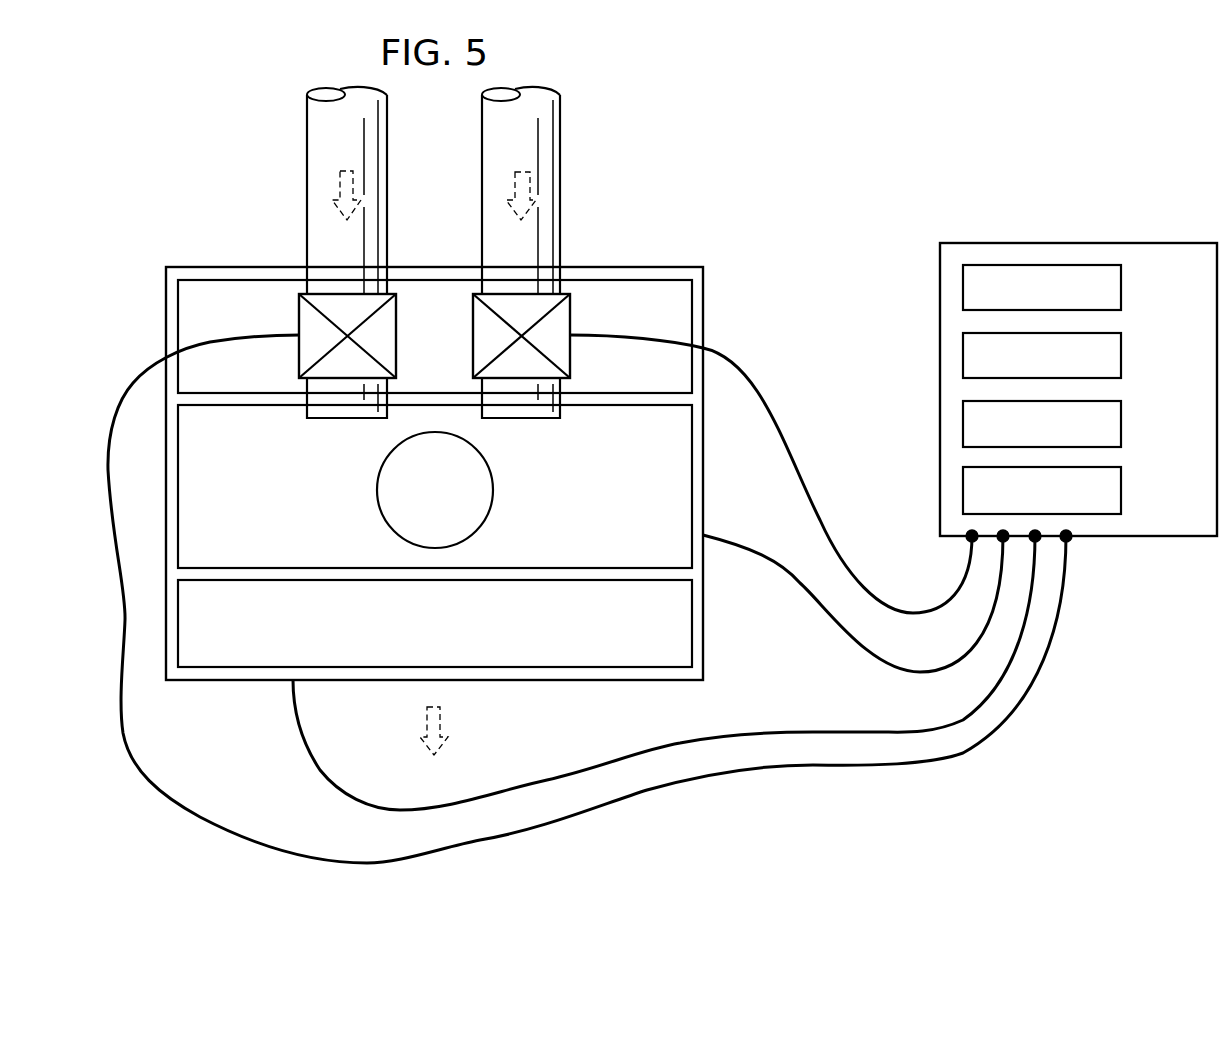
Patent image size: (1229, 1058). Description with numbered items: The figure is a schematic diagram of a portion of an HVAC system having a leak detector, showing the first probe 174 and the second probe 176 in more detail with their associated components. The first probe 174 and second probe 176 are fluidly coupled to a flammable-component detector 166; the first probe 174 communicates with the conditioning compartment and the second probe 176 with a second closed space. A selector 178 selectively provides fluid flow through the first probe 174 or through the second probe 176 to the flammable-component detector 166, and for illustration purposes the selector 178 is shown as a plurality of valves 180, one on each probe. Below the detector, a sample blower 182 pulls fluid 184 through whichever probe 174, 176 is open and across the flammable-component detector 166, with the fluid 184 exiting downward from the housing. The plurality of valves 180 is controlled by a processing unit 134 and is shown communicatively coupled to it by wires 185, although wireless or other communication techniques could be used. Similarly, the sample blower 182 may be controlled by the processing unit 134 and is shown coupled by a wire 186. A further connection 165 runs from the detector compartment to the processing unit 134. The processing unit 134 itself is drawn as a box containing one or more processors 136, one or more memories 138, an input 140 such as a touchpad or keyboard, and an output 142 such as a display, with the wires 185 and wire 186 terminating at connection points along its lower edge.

The processing unit 134 is at (1078, 421).
The processor 136 is at (1121, 288).
The memory 138 is at (1121, 355).
The input 140 is at (1121, 423).
The output 142 is at (1121, 490).
The sensor wire 165 is at (802, 578).
The flammable-component detector 166 is at (571, 503).
The first probe 174 is at (307, 147).
The second probe 176 is at (560, 182).
The selector 178 is at (703, 300).
The plurality of valves 180 is at (299, 322).
The sample blower 182 is at (411, 640).
The fluid 184 is at (442, 722).
The wires 185 is at (840, 560).
The wire 186 is at (377, 808).